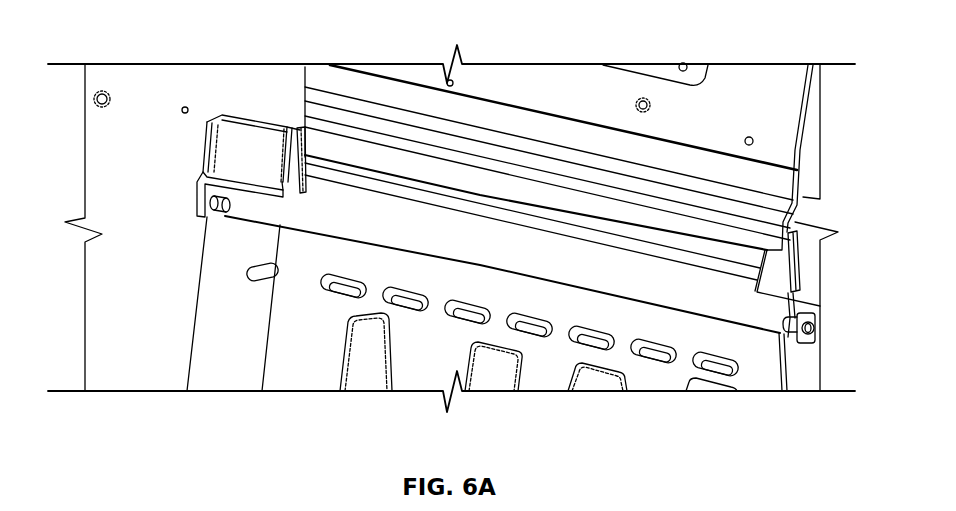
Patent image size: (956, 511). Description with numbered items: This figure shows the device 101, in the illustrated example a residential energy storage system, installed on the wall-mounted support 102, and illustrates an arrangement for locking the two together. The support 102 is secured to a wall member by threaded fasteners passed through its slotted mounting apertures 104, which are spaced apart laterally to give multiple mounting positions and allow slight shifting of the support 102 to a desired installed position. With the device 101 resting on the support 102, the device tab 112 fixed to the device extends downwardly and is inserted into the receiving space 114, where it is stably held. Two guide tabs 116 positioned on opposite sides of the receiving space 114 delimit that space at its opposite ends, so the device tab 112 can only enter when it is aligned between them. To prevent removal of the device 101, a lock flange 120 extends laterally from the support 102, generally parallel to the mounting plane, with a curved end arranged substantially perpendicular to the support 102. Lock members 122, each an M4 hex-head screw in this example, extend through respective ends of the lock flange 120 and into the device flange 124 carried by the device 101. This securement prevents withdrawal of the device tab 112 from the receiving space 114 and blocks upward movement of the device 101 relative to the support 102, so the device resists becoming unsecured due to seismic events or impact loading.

The device 101 is at (117, 283).
The support 102 is at (323, 357).
The mounting apertures 104 is at (405, 310).
The device tab 112 is at (670, 210).
The receiving space 114 is at (303, 120).
The guide tabs 116 is at (285, 150).
The lock flange 120 is at (247, 197).
The lock member 122 is at (217, 207).
The device flange 124 is at (204, 314).